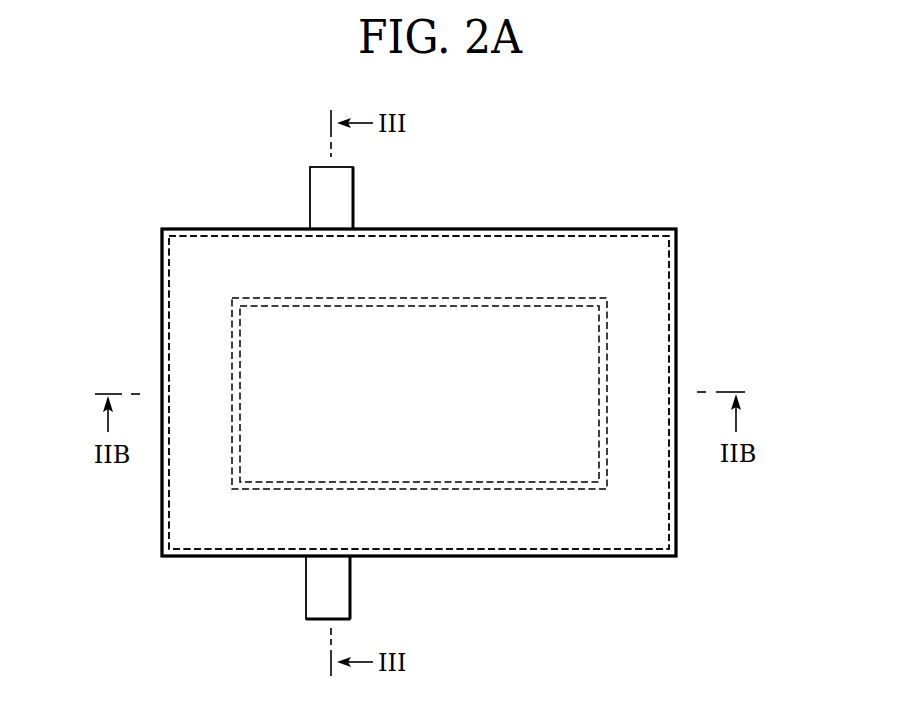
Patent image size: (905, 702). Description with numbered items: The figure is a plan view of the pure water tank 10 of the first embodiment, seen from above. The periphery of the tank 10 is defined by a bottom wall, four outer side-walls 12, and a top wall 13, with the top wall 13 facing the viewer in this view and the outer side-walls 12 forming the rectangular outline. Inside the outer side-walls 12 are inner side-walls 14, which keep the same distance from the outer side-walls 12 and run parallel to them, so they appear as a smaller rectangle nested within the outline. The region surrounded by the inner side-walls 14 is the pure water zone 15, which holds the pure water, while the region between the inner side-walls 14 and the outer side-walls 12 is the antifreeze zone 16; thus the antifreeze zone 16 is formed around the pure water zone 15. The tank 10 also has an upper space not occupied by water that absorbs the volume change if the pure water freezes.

The pure water tank 10 is at (203, 194).
The outer side-walls 12 is at (523, 555).
The top wall 13 is at (614, 256).
The inner side-walls 14 is at (593, 483).
The pure water zone 15 is at (452, 317).
The antifreeze zone 16 is at (534, 253).